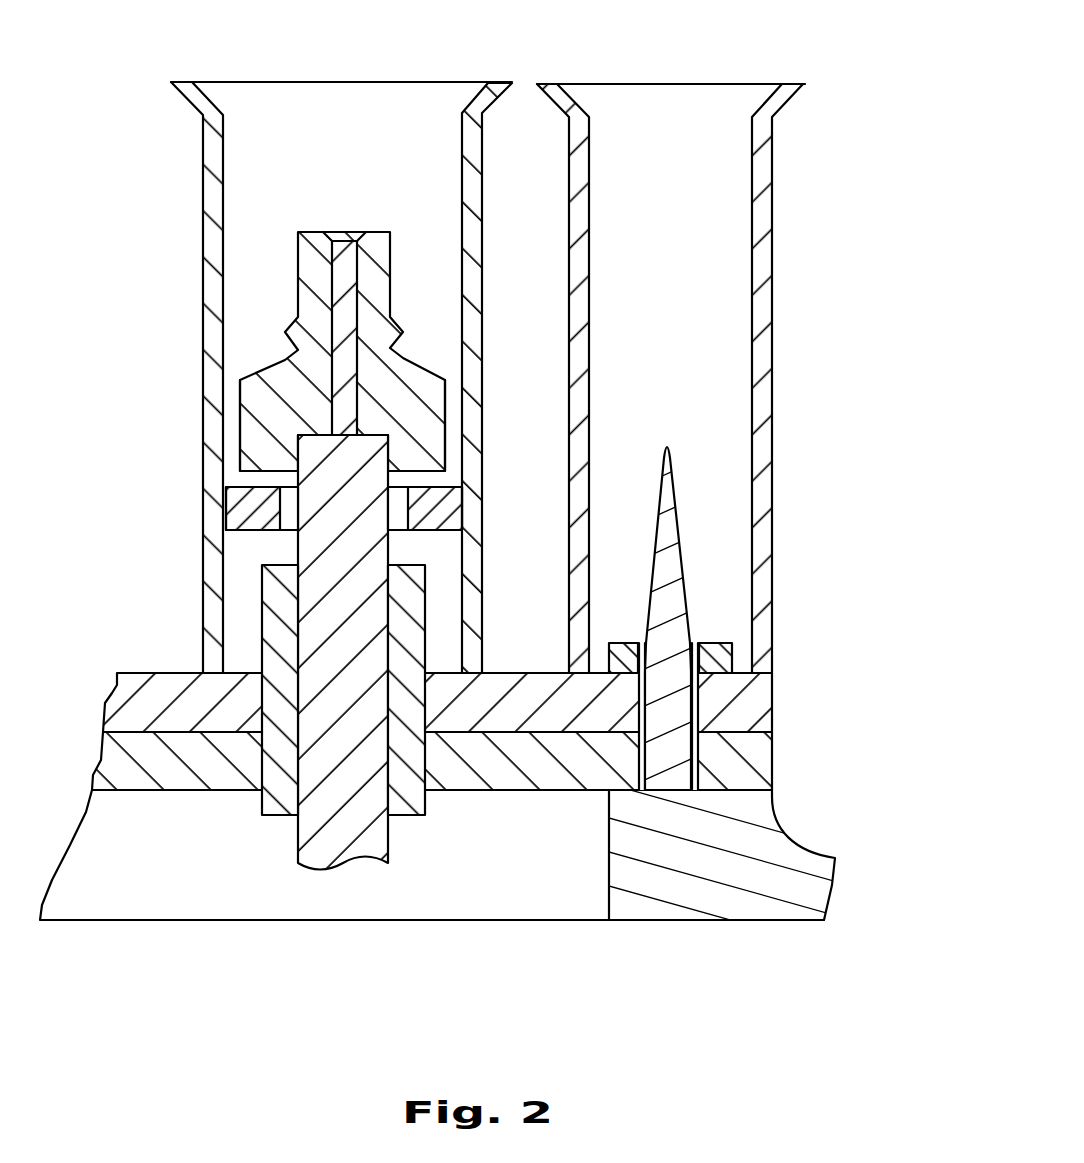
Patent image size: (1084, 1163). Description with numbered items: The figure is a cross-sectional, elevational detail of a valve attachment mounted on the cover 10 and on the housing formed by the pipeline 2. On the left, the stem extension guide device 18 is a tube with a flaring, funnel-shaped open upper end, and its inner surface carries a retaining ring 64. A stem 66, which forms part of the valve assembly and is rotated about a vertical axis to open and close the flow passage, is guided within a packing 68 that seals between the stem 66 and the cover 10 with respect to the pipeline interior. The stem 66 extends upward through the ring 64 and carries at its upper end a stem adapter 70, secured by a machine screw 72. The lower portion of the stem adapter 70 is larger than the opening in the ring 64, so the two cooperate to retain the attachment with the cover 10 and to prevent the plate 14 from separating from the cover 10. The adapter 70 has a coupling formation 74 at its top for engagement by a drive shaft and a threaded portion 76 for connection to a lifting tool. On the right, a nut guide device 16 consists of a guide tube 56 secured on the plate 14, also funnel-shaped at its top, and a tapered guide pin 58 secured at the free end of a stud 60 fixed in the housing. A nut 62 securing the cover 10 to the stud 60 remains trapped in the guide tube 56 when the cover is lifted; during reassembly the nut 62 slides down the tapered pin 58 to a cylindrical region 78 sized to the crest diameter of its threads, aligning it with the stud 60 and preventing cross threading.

The pipeline 2 is at (762, 848).
The cover 10 is at (747, 762).
The plate 14 is at (747, 703).
The nut guide device 16 is at (907, 41).
The stem extension guide device 18 is at (203, 160).
The guide tube 56 is at (772, 282).
The tapered guide pin 58 is at (668, 492).
The stud 60 is at (668, 745).
The nut 62 is at (733, 653).
The retaining ring 64 is at (240, 492).
The stem 66 is at (313, 805).
The packing 68 is at (273, 713).
The stem adapter 70 is at (75, 278).
The machine screw 72 is at (338, 252).
The coupling formation 74 is at (393, 253).
The threaded portion 76 is at (283, 332).
The cylindrical region 78 is at (702, 643).